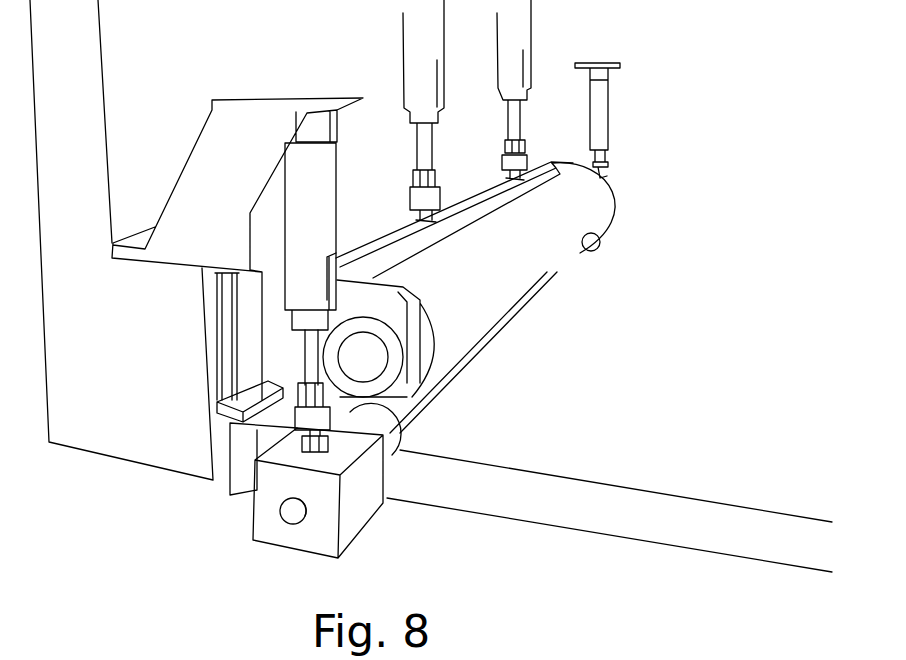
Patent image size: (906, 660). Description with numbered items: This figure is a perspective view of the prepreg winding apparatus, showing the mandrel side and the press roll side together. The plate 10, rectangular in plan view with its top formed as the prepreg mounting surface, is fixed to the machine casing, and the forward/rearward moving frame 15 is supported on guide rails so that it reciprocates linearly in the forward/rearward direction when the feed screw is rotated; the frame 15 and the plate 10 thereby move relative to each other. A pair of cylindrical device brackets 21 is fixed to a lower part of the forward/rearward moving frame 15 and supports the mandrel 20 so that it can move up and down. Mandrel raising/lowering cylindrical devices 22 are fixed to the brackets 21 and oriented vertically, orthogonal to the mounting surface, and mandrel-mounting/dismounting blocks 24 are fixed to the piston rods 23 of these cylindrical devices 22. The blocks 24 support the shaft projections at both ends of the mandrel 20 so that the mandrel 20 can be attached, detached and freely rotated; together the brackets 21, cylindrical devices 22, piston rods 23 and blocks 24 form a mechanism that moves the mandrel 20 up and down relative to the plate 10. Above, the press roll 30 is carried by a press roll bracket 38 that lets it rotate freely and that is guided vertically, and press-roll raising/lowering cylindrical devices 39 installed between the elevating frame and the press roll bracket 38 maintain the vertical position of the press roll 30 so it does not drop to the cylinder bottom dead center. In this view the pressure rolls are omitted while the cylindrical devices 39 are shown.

The plate 10 is at (638, 515).
The forward/rearward moving frame 15 is at (140, 442).
The mandrel 20 is at (485, 338).
The cylindrical device brackets 21 is at (208, 150).
The mandrel raising/lowering cylindrical devices 22 is at (318, 185).
The piston rods 23 is at (310, 355).
The mandrel-mounting/dismounting blocks 24 is at (393, 448).
The press roll 30 is at (538, 252).
The press roll bracket 38 is at (470, 197).
The press-roll raising/lowering cylindrical devices 39 is at (507, 33).